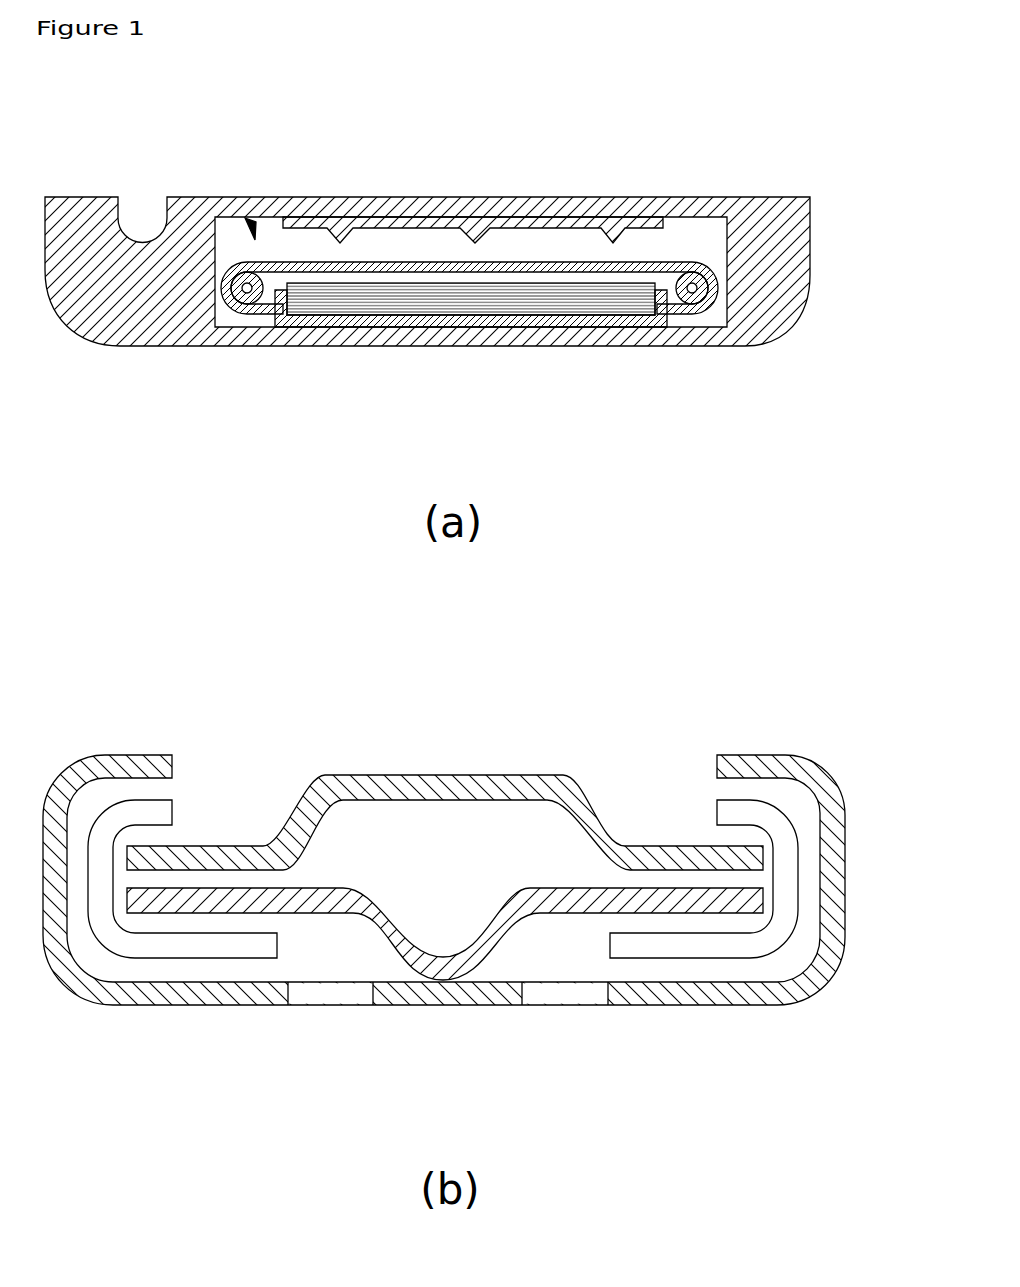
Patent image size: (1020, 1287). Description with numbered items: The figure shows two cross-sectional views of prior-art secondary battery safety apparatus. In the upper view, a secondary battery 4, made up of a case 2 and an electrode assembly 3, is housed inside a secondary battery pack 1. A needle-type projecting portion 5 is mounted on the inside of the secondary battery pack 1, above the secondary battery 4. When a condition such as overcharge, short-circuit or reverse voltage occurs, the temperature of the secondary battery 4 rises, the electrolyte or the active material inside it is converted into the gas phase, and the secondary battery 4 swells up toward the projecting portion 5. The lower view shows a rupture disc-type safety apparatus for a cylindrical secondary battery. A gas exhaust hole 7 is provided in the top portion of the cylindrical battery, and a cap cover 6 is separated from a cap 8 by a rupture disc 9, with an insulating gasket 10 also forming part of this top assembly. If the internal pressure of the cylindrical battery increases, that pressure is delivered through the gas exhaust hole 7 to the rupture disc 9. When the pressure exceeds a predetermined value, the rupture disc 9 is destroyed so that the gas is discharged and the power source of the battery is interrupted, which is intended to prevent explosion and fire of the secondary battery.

The secondary battery pack 1 is at (787, 256).
The case 2 is at (655, 320).
The electrode assembly 3 is at (480, 300).
The secondary battery 4 is at (250, 238).
The projecting portion 5 is at (607, 235).
The cap cover 6 is at (660, 997).
The gas exhaust hole 7 is at (334, 995).
The cap 8 is at (383, 787).
The rupture disc 9 is at (750, 898).
The insulating gasket 10 is at (737, 947).